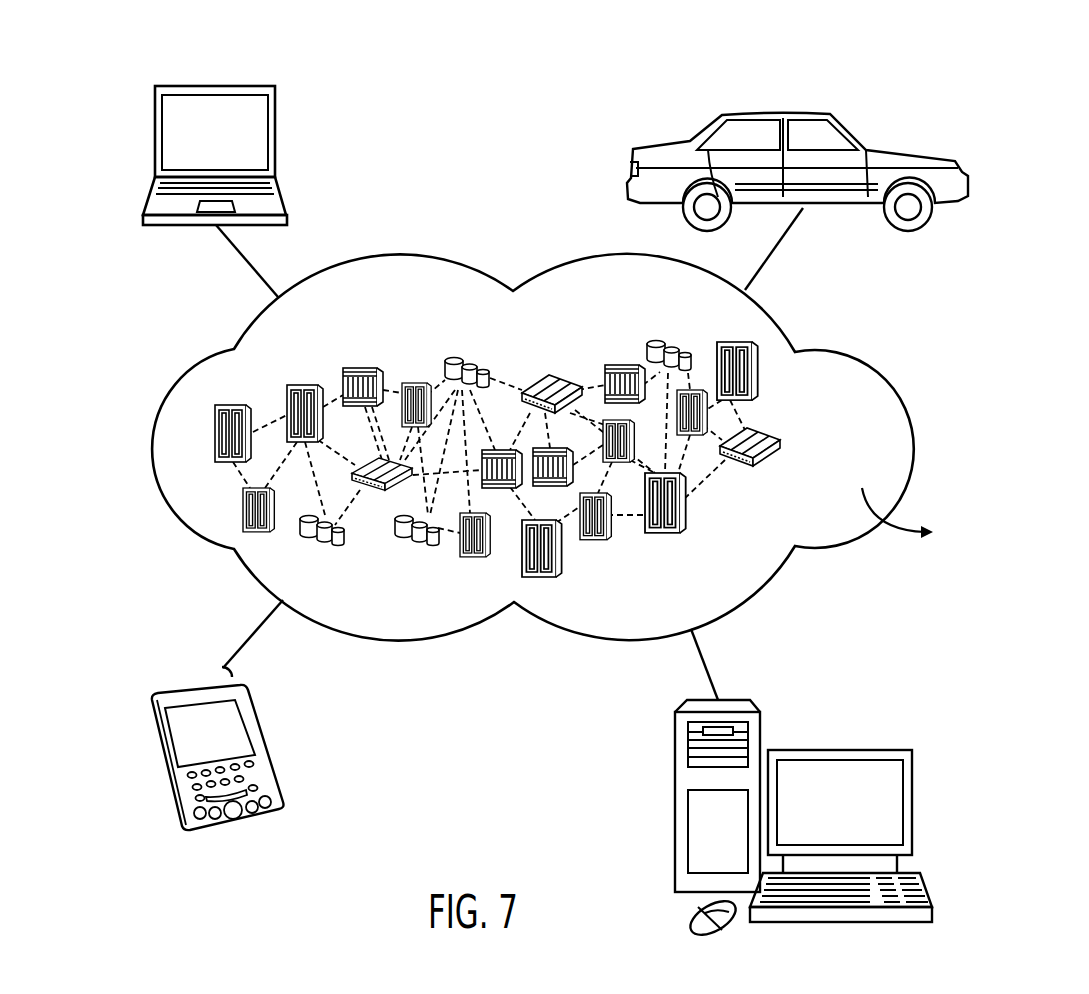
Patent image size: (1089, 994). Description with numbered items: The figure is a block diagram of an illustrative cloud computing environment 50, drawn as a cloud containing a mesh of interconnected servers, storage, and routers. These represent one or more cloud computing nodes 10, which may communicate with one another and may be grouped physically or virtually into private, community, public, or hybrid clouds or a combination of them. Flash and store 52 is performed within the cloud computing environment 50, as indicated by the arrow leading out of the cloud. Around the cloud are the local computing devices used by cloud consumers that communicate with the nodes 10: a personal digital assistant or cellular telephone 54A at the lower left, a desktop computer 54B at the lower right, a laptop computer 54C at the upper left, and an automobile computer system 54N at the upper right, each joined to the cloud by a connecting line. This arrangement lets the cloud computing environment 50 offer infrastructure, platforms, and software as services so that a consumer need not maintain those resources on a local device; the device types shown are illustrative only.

The cloud computing node 10 is at (800, 449).
The cloud computing environment 50 is at (855, 352).
The flash and store 52 is at (992, 502).
The personal digital assistant or cellular telephone 54A is at (195, 687).
The desktop computer 54B is at (840, 750).
The laptop computer 54C is at (215, 85).
The automobile computer system 54N is at (776, 112).